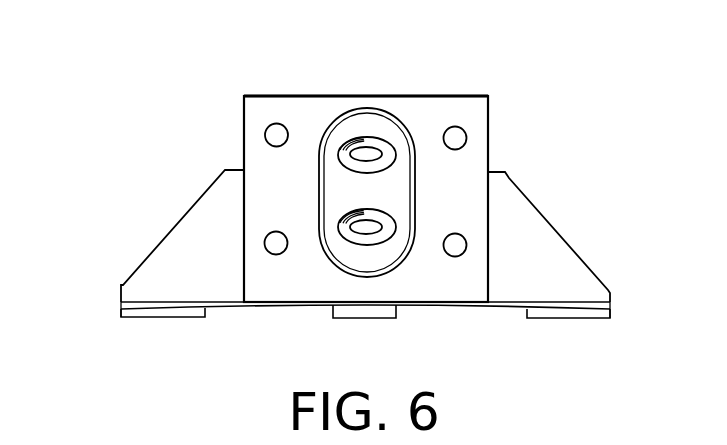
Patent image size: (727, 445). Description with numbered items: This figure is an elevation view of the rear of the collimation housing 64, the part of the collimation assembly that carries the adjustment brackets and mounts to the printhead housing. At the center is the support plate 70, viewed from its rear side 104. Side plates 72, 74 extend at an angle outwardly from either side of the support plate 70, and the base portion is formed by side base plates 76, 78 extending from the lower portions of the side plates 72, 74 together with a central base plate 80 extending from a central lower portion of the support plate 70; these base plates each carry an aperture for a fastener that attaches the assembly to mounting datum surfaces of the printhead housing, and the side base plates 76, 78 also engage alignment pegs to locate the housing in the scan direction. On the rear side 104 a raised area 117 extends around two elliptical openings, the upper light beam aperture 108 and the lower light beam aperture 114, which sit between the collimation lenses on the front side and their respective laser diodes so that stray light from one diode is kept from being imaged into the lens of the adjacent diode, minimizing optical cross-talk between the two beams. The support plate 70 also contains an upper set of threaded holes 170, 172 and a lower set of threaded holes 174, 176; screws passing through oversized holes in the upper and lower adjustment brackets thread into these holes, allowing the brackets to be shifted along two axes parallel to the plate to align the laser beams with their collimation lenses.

The collimation housing 64 is at (506, 88).
The support plate 70 is at (298, 110).
The side plate 72 is at (165, 268).
The side plate 74 is at (572, 282).
The side base plate 76 is at (158, 318).
The side base plate 78 is at (560, 320).
The central base plate 80 is at (372, 318).
The rear side 104 is at (422, 110).
The light beam aperture 108 is at (371, 148).
The lower light beam aperture 114 is at (355, 232).
The raised area 117 is at (415, 205).
The threaded hole 170 is at (467, 137).
The threaded hole 172 is at (265, 135).
The threaded hole 174 is at (467, 245).
The threaded hole 176 is at (265, 243).